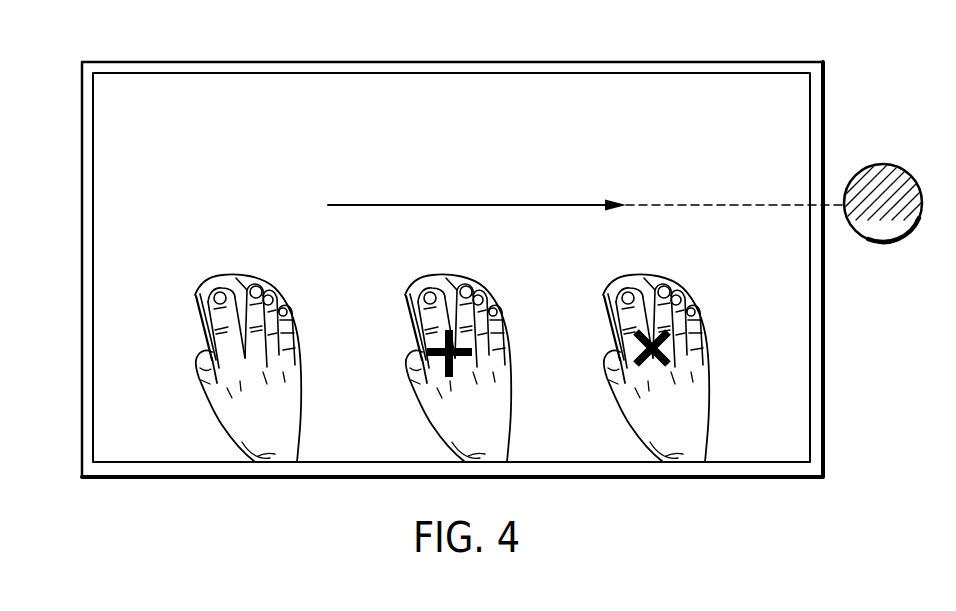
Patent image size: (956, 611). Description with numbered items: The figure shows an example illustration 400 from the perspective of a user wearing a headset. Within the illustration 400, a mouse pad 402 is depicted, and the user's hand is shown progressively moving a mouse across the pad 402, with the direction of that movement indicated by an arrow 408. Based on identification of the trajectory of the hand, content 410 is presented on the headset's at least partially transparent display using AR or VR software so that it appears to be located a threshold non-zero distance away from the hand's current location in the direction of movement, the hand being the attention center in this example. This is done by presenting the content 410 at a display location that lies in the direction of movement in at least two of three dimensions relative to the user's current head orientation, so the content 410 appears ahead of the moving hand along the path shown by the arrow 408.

The illustration 400 is at (831, 36).
The mouse pad 402 is at (137, 127).
The arrow 408 is at (478, 203).
The content 410 is at (887, 243).